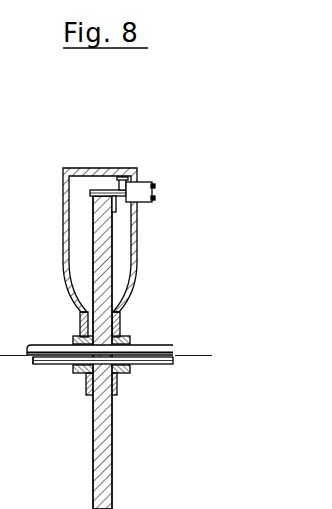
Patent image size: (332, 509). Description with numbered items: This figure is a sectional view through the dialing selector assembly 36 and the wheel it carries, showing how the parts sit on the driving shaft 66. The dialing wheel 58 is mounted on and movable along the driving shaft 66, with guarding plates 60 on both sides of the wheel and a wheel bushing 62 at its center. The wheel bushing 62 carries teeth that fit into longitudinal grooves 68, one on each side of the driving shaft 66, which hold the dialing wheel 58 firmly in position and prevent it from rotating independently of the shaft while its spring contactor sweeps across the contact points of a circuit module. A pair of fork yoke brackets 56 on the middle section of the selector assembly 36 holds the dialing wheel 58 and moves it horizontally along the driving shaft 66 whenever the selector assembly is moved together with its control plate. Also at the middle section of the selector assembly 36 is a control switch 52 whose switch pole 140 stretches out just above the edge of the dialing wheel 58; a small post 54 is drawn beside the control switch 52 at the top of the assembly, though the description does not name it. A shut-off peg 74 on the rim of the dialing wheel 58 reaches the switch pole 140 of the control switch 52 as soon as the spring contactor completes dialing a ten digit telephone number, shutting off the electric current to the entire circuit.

The dialing selector assembly 36 is at (107, 168).
The control switch 52 is at (146, 188).
The actuator post 54 is at (128, 177).
The fork yoke brackets 56 is at (125, 292).
The dialing wheel 58 is at (92, 443).
The guarding plates 60 is at (118, 388).
The wheel bushing 62 is at (130, 337).
The driving shaft 66 is at (52, 350).
The grooves 68 is at (33, 359).
The shut-off peg 74 is at (115, 208).
The switch pole 140 is at (112, 194).